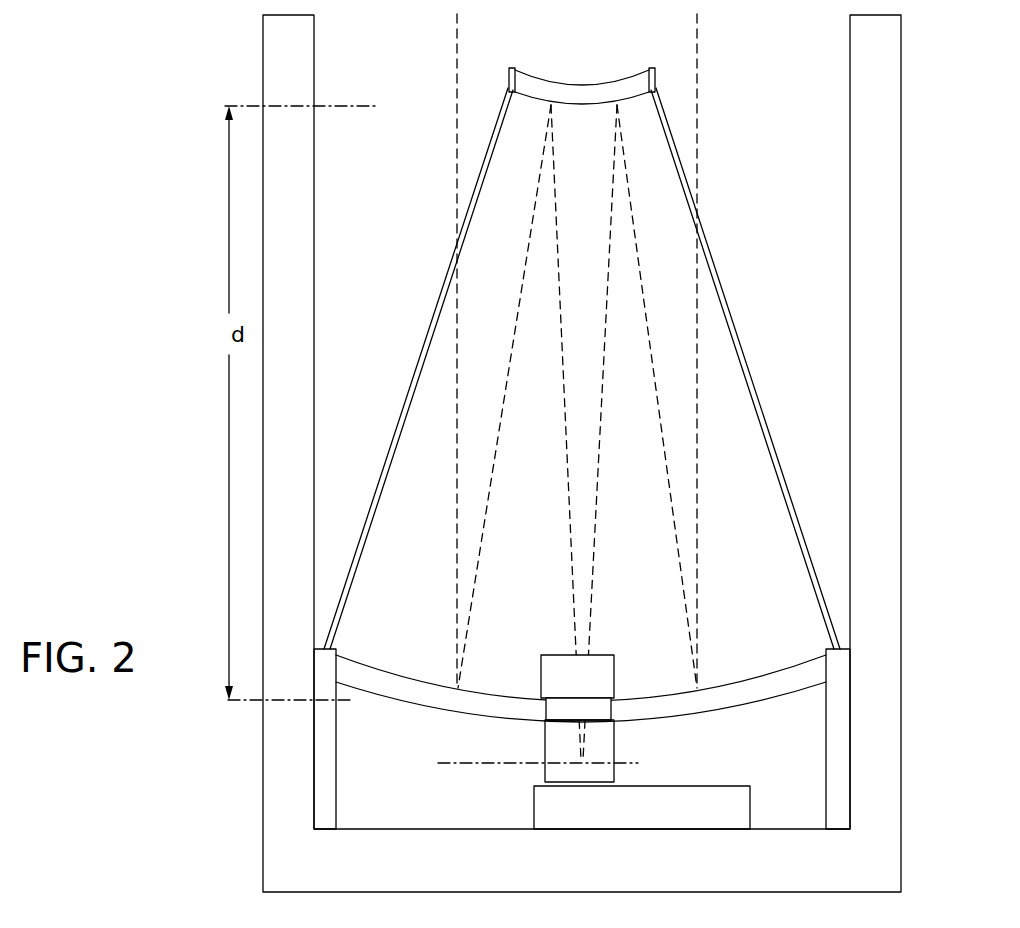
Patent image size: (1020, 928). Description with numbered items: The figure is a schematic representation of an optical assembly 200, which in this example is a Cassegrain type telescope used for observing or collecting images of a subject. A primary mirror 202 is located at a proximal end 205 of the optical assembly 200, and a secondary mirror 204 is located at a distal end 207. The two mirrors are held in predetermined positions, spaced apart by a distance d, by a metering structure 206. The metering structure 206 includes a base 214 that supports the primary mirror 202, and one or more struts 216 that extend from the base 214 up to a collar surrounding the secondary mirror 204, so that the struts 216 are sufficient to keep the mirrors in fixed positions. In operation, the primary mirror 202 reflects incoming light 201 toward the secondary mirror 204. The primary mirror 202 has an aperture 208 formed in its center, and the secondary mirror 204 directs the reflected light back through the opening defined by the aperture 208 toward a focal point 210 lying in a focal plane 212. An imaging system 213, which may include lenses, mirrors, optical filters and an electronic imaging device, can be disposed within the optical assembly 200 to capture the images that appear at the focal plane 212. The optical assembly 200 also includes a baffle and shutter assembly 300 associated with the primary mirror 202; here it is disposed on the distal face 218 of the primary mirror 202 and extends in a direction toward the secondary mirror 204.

The optical assembly 200 is at (118, 215).
The incoming light 201 is at (458, 76).
The primary mirror 202 is at (458, 688).
The secondary mirror 204 is at (602, 84).
The proximal end 205 is at (445, 739).
The metering structure 206 is at (413, 370).
The distal end 207 is at (656, 92).
The aperture 208 is at (600, 686).
The focal point 210 is at (577, 762).
The focal plane 212 is at (468, 767).
The imaging system 213 is at (690, 815).
The base 214 is at (325, 813).
The struts 216 is at (738, 330).
The distal face 218 is at (753, 680).
The baffle and shutter assembly (BSA) 300 is at (535, 645).